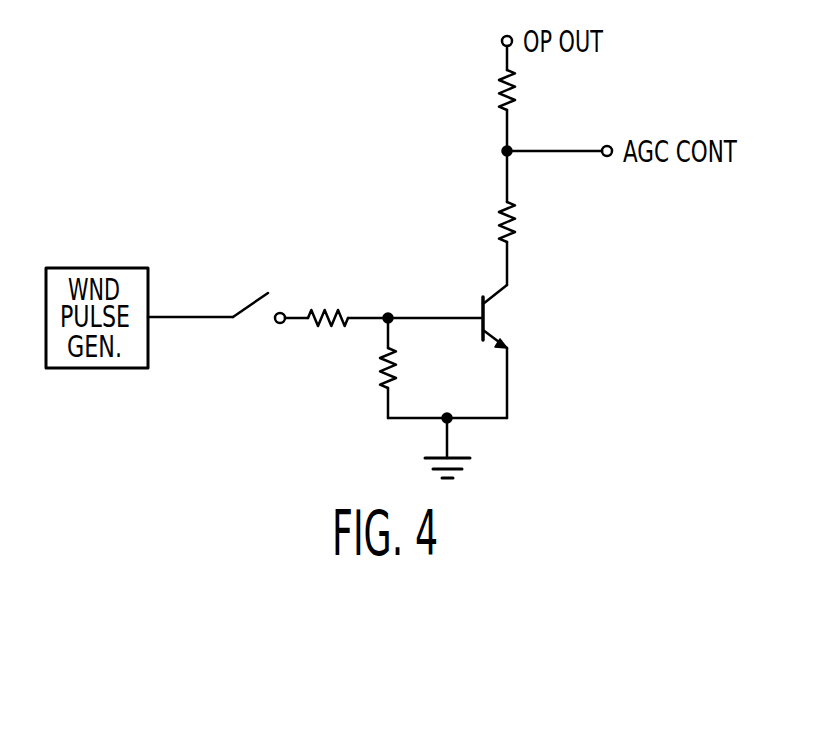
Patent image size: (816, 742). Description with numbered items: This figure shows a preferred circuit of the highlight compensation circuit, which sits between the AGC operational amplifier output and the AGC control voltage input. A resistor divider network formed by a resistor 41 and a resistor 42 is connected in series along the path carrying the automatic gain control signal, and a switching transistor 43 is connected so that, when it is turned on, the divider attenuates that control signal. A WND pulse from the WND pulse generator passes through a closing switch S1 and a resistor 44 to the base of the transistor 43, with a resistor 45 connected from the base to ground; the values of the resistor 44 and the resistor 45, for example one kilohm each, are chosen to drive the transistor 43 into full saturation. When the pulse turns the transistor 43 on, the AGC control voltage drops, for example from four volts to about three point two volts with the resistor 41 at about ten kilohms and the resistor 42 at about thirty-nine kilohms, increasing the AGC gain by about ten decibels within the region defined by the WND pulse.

The resistor 41 is at (491, 91).
The resistor 42 is at (491, 222).
The switching transistor 43 is at (505, 316).
The resistor 44 is at (328, 300).
The resistor 45 is at (404, 368).
The switch S1 is at (245, 306).